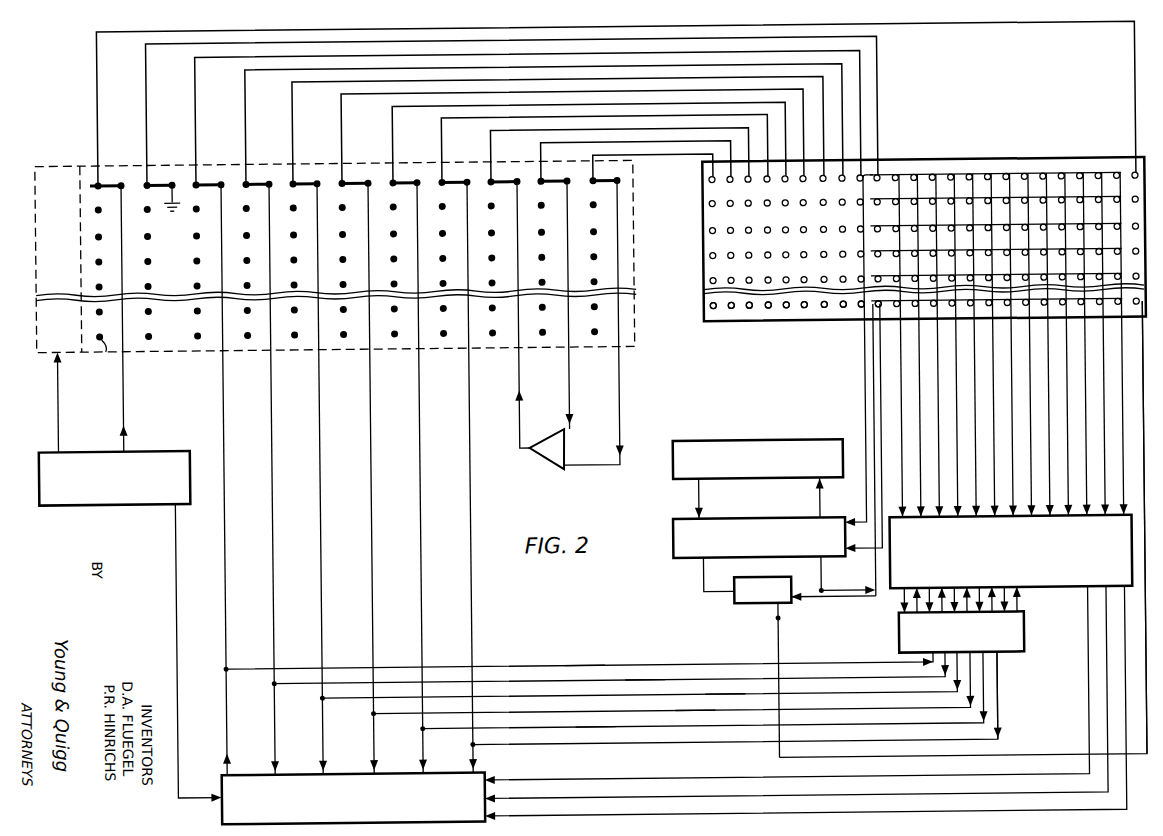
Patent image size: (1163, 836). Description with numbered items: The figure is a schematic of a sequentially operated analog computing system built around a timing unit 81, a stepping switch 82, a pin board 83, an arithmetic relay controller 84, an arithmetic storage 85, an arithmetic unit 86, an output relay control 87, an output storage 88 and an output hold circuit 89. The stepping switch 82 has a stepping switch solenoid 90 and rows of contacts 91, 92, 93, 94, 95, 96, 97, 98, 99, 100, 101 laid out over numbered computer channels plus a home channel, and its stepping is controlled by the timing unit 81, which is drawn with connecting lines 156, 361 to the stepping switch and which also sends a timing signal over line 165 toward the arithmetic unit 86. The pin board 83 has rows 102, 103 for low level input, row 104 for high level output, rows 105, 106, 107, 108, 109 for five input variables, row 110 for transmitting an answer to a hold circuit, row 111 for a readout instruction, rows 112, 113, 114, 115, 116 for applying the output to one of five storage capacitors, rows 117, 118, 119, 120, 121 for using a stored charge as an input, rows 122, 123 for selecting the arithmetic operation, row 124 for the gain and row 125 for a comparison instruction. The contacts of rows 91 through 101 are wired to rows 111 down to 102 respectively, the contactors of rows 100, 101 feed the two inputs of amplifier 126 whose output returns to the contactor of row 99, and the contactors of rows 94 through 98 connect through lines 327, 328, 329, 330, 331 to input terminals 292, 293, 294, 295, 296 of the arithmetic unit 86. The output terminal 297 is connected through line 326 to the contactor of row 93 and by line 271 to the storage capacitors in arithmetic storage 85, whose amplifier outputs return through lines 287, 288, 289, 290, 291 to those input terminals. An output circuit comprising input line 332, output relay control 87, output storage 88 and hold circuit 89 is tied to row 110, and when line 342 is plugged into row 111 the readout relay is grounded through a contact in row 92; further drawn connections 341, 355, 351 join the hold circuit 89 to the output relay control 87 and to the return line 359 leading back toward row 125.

The timing unit 81 is at (162, 450).
The stepping switch 82 is at (91, 170).
The pin board 83 is at (988, 146).
The arithmetic relay controller 84 is at (1064, 598).
The arithmetic storage 85 is at (894, 630).
The arithmetic unit 86 is at (214, 812).
The output relay control 87 is at (787, 523).
The output storage 88 is at (782, 446).
The output hold circuit 89 is at (752, 612).
The stepping switch solenoid 90 is at (40, 167).
The row of contacts 91 is at (101, 179).
The row of contacts 92 is at (147, 180).
The row of contacts 93 is at (198, 180).
The row of contacts 94 is at (247, 181).
The row of contacts 95 is at (295, 181).
The row of contacts 96 is at (343, 181).
The row of contacts 97 is at (393, 182).
The row of contacts 98 is at (442, 181).
The row of contacts 99 is at (490, 182).
The row of contacts 100 is at (541, 181).
The row of contacts 101 is at (591, 181).
The pin board row 102 is at (712, 316).
The pin board row 103 is at (730, 315).
The pin board row 104 is at (748, 315).
The pin board row 105 is at (767, 315).
The pin board row 106 is at (785, 315).
The pin board row 107 is at (803, 315).
The pin board row 108 is at (823, 315).
The pin board row 109 is at (842, 315).
The pin board row 110 is at (860, 315).
The pin board row 111 is at (877, 315).
The pin board row 112 is at (894, 346).
The pin board row 113 is at (912, 345).
The pin board row 114 is at (931, 345).
The pin board row 115 is at (949, 345).
The pin board row 116 is at (968, 345).
The pin board row 117 is at (986, 345).
The pin board row 118 is at (1005, 344).
The pin board row 119 is at (1023, 344).
The pin board row 120 is at (1041, 344).
The pin board row 121 is at (1060, 344).
The pin board row 122 is at (1078, 344).
The pin board row 123 is at (1097, 343).
The pin board row 124 is at (1115, 343).
The pin board row 125 is at (1135, 527).
The amplifier 126 is at (551, 435).
The timing line 156 is at (125, 419).
The line 165 is at (173, 590).
The line 271 is at (588, 669).
The line 287 is at (995, 704).
The line 288 is at (596, 733).
The line 289 is at (690, 717).
The line 290 is at (738, 699).
The line 291 is at (655, 684).
The input terminal 292 is at (269, 686).
The input terminal 293 is at (316, 701).
The input terminal 294 is at (367, 717).
The input terminal 295 is at (416, 732).
The input terminal 296 is at (466, 749).
The output terminal 297 is at (221, 668).
The line 326 is at (222, 405).
The line 327 is at (270, 405).
The line 328 is at (318, 405).
The line 329 is at (369, 403).
The line 330 is at (418, 403).
The line 331 is at (468, 403).
The input line 332 is at (862, 393).
The hold output line 341 is at (830, 596).
The line 342 is at (871, 405).
The hold line 351 is at (782, 625).
The hold input line 355 is at (859, 606).
The feedback line 359 is at (1143, 764).
The timing line 361 is at (59, 420).